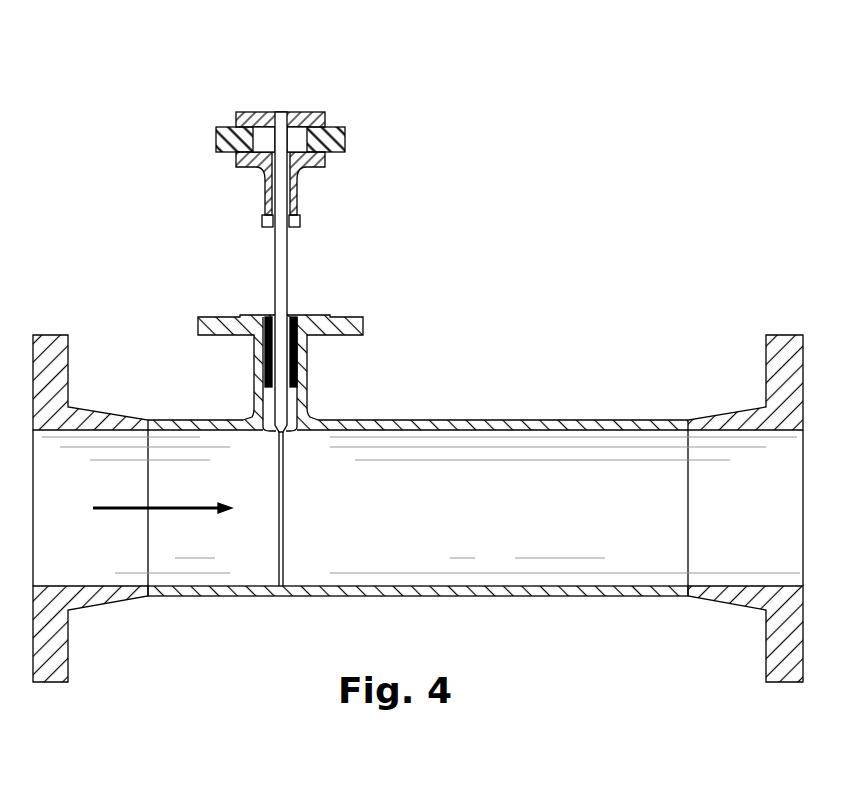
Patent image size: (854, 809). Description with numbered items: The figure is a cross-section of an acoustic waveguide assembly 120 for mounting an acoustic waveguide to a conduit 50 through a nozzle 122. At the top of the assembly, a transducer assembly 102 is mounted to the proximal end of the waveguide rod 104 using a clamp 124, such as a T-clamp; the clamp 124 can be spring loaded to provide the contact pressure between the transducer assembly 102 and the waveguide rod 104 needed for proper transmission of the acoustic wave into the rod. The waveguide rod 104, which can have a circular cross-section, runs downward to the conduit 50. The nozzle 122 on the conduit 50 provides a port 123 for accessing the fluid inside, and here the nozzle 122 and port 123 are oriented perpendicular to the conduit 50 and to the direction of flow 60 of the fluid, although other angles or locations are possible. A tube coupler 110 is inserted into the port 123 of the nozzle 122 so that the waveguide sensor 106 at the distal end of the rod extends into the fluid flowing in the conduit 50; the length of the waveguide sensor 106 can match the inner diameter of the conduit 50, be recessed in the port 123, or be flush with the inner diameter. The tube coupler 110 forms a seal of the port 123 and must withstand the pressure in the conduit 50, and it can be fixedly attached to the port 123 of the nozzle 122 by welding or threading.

The conduit 50 is at (413, 427).
The direction of flow 60 is at (117, 507).
The transducer assembly 102 is at (260, 137).
The waveguide rod 104 is at (281, 280).
The waveguide sensor 106 is at (280, 523).
The tube coupler 110 is at (293, 320).
The acoustic waveguide assembly 120 is at (341, 194).
The nozzle 122 is at (356, 316).
The port 123 is at (292, 402).
The clamp 124 is at (223, 131).